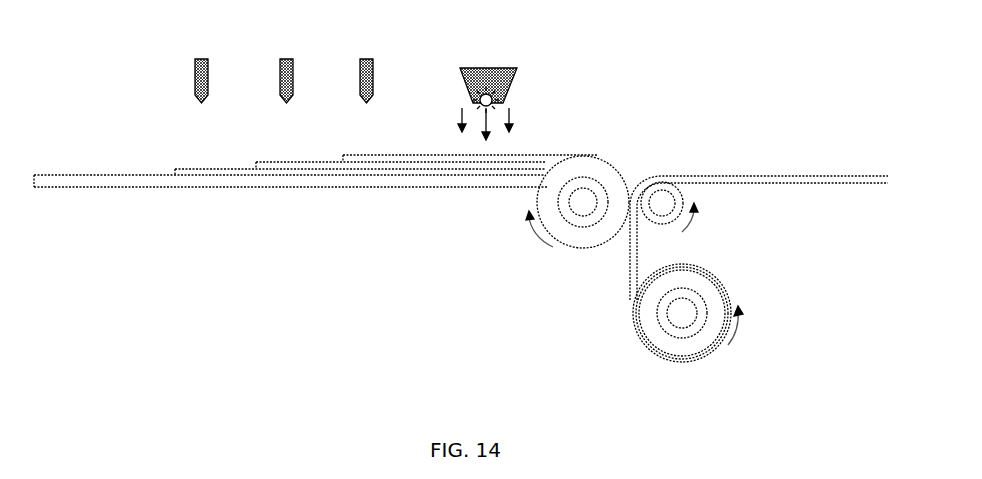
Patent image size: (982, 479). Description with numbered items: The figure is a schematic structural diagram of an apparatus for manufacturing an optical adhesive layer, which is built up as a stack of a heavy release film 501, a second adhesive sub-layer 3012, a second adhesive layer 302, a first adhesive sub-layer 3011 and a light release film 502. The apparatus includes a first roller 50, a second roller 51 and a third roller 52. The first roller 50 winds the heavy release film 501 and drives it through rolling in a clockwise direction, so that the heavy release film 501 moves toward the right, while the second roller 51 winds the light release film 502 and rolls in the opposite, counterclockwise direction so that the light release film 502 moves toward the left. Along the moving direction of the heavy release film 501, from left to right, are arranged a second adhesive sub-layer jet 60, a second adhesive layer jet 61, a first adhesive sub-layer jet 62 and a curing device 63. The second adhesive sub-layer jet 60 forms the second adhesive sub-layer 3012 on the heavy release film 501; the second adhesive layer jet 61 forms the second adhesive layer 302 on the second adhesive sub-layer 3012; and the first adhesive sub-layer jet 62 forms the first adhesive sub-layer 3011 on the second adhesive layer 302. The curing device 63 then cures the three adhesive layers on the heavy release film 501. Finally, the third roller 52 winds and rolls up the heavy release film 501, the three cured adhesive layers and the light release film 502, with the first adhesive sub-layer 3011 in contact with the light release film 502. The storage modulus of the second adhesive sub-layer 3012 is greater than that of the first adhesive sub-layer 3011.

The first roller 50 is at (575, 237).
The second roller 51 is at (662, 193).
The third roller 52 is at (682, 352).
The second adhesive sub-layer jet 60 is at (195, 70).
The second adhesive layer jet 61 is at (280, 70).
The first adhesive sub-layer jet 62 is at (360, 70).
The curing device 63 is at (482, 65).
The heavy release film 501 is at (137, 190).
The light release film 502 is at (766, 182).
The second adhesive layer 302 is at (295, 175).
The first adhesive sub-layer 3011 is at (408, 160).
The second adhesive sub-layer 3012 is at (213, 185).